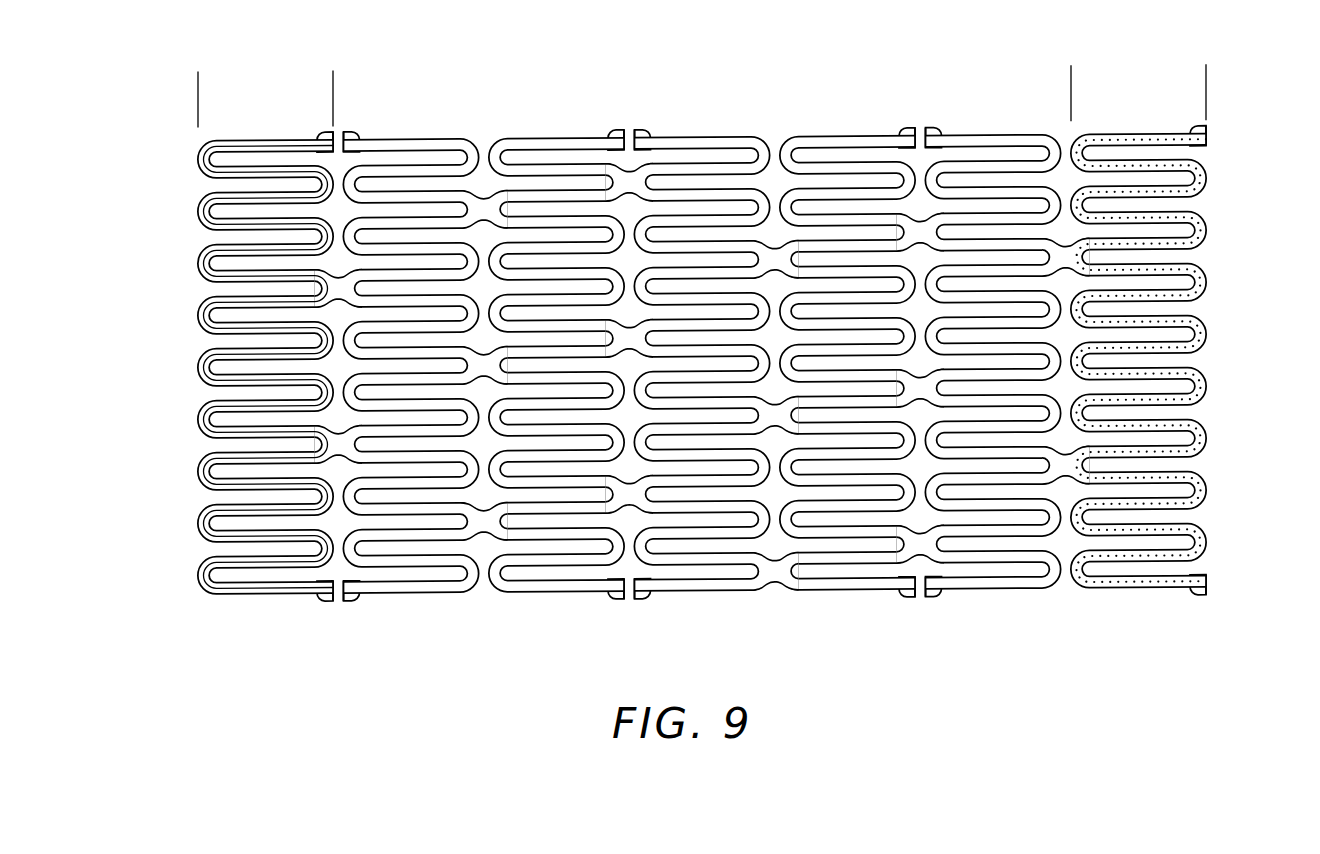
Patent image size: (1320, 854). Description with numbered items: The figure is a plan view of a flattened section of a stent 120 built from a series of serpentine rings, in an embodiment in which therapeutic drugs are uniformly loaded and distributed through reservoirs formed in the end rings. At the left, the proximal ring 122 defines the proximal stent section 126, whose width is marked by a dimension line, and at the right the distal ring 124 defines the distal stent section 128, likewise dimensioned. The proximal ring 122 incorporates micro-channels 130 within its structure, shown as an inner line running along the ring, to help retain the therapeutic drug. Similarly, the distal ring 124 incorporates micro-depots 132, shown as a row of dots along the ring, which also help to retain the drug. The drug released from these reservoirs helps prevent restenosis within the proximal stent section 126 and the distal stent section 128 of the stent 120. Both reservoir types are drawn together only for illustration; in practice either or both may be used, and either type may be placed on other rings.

The stent 120 is at (137, 143).
The proximal ring 122 is at (203, 262).
The distal ring 124 is at (1203, 238).
The proximal stent section 126 is at (198, 85).
The distal stent section 128 is at (1071, 85).
The micro-channels 130 is at (203, 366).
The micro-depots 132 is at (1203, 348).